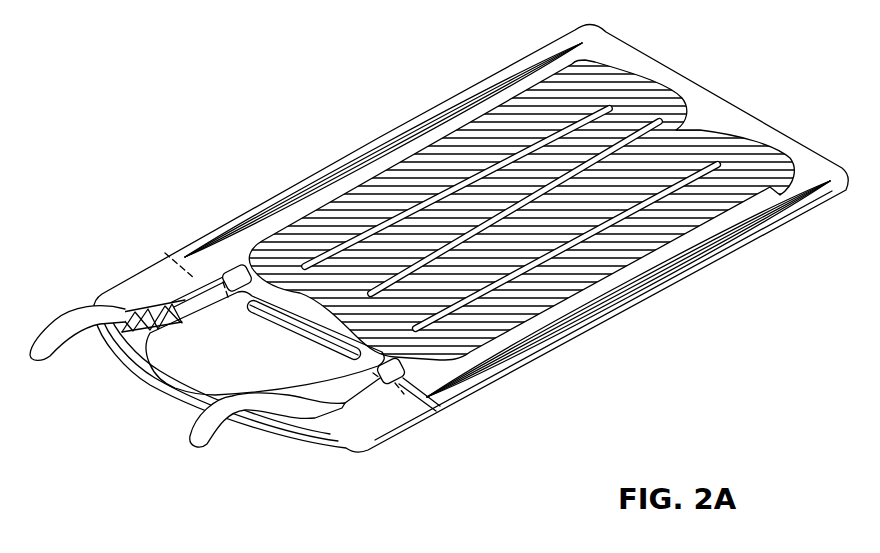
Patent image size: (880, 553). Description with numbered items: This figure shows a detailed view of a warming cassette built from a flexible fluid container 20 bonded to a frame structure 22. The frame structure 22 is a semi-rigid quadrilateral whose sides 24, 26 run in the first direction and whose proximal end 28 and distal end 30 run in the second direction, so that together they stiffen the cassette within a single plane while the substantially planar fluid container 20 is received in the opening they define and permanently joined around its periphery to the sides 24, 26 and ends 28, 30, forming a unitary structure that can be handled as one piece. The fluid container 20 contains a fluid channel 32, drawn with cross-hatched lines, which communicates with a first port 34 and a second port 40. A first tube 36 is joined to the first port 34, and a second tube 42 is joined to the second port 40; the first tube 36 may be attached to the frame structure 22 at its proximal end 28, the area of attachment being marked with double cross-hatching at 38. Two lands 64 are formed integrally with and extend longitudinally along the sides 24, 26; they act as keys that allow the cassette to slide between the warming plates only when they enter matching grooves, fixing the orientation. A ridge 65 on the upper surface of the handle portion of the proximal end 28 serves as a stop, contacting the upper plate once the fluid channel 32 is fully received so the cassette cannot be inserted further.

The fluid container 20 is at (707, 113).
The frame structure 22 is at (465, 403).
The side 24 is at (612, 316).
The side 26 is at (385, 138).
The proximal end 28 is at (400, 392).
The distal end 30 is at (656, 58).
The fluid channel 32 is at (456, 221).
The first port 34 is at (223, 275).
The first tube 36 is at (56, 320).
The area of attachment 38 is at (140, 312).
The second port 40 is at (388, 376).
The second tube 42 is at (188, 427).
The lands 64 is at (313, 180).
The ridge 65 is at (297, 327).